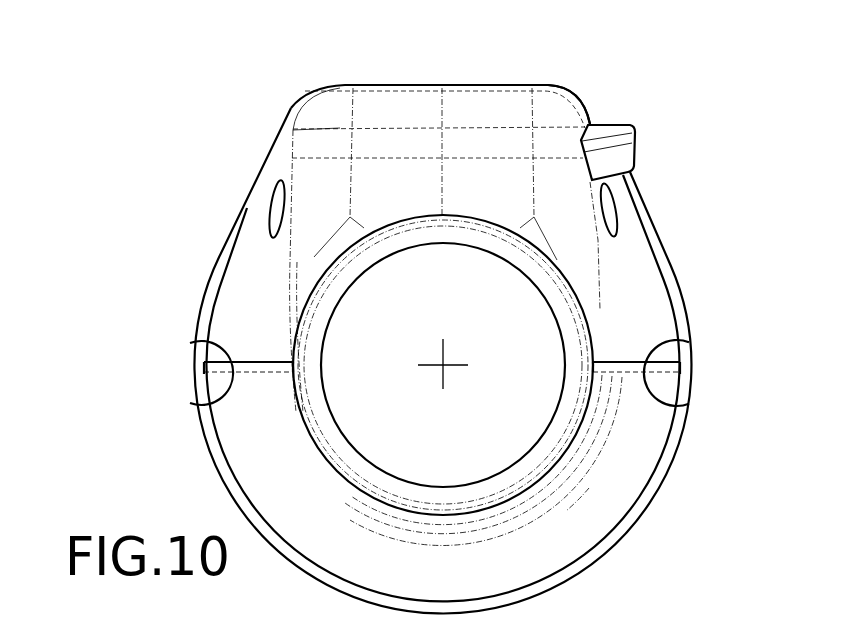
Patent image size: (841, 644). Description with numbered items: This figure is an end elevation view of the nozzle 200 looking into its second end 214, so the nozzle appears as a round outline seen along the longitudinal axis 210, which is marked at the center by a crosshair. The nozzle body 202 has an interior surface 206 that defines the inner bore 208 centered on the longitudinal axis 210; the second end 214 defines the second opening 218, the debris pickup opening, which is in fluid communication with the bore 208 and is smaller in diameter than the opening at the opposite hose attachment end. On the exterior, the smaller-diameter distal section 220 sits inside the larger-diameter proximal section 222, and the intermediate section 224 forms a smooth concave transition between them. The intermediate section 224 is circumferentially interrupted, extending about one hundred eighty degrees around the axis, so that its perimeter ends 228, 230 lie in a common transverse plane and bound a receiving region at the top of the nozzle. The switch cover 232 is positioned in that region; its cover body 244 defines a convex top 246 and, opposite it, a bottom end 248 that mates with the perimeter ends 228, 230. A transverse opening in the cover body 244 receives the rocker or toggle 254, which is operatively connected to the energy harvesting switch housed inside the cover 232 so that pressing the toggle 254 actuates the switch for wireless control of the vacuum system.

The nozzle 200 is at (641, 540).
The nozzle body 202 is at (693, 297).
The interior surface 206 is at (506, 273).
The inner bore 208 is at (340, 360).
The longitudinal axis 210 is at (440, 368).
The distal second end 214 is at (567, 402).
The second opening 218 is at (555, 383).
The distal section 220 is at (305, 425).
The proximal section 222 is at (655, 500).
The intermediate section 224 is at (533, 528).
The perimeter end 228 is at (668, 395).
The perimeter end 230 is at (200, 402).
The switch cover 232 is at (576, 95).
The cover body 244 is at (569, 104).
The convex top 246 is at (418, 103).
The end 248 is at (194, 345).
The toggle 254 is at (638, 144).